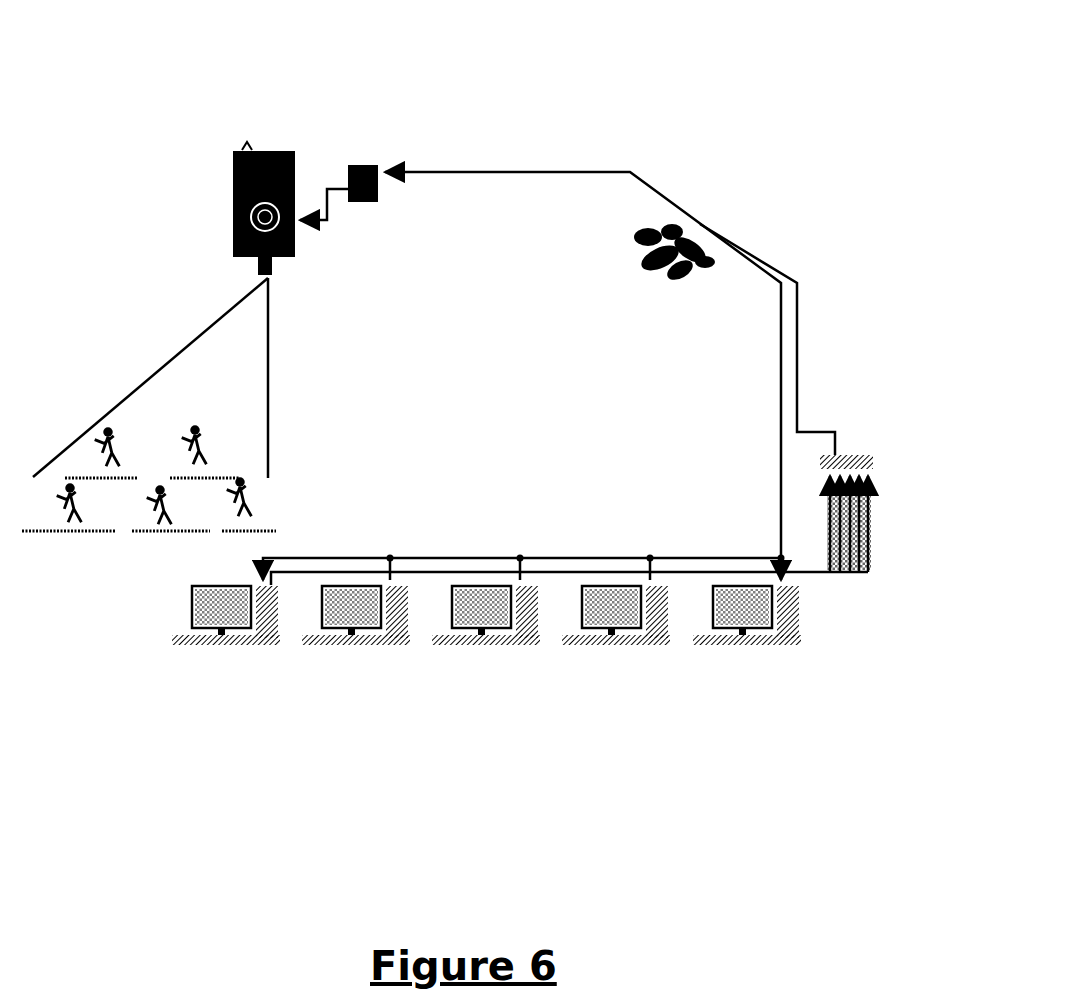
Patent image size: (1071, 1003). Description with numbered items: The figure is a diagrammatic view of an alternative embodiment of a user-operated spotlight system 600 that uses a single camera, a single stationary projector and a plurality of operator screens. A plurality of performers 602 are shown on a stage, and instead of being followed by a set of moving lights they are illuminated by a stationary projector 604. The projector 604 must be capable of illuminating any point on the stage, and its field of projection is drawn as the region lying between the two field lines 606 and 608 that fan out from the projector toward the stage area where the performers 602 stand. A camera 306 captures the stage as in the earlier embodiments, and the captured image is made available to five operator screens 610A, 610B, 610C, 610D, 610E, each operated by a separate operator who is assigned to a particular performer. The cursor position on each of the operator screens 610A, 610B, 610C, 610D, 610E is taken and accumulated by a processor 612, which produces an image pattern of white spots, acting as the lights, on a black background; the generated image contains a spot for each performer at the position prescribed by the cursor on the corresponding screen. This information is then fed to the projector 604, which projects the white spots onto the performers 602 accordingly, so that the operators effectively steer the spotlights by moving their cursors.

The user-operated spotlight system 600 is at (662, 87).
The stationary projector 604 is at (238, 190).
The field line 606 is at (163, 365).
The field line 608 is at (268, 337).
The performers 602 is at (240, 447).
The camera 306 is at (692, 243).
The processor 612 is at (845, 455).
The operator screen 610A is at (198, 622).
The operator screen 610B is at (328, 622).
The operator screen 610C is at (458, 622).
The operator screen 610D is at (588, 622).
The operator screen 610E is at (720, 620).